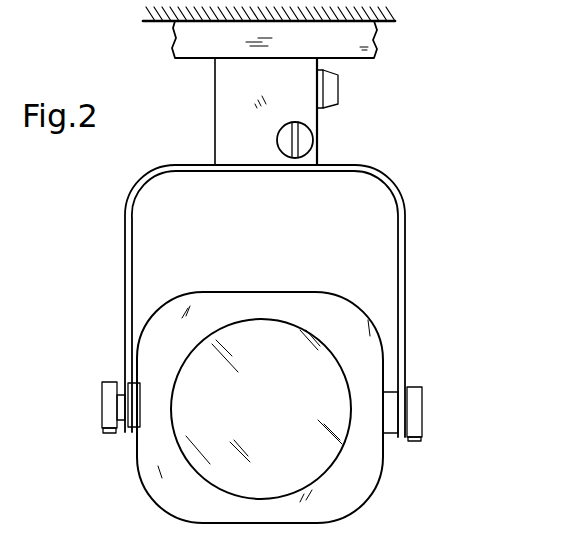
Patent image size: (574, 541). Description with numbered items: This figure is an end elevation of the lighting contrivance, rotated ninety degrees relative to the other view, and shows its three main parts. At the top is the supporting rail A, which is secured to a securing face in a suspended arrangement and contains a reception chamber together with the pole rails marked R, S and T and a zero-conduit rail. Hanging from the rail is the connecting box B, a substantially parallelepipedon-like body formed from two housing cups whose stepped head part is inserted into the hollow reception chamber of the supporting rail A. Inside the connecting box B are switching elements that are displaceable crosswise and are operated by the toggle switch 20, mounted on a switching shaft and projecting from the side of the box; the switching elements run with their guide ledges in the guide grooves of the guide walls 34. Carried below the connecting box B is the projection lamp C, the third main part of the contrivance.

The supporting rail A is at (375, 48).
The connecting box B is at (215, 105).
The projection lamp C is at (198, 288).
The toggle switch 20 is at (338, 96).
The guide walls 34 is at (312, 144).